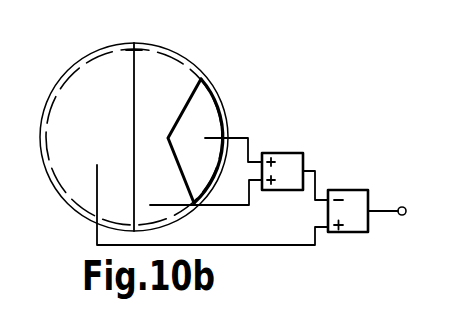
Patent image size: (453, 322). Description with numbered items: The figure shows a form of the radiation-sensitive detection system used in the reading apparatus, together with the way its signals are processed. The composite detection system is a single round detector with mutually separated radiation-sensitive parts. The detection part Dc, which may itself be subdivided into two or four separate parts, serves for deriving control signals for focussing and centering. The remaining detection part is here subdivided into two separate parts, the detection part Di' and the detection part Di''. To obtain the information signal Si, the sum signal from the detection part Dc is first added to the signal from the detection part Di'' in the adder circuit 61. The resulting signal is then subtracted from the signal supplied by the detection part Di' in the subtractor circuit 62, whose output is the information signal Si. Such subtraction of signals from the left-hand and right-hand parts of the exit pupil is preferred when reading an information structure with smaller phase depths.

The detection part Di' is at (126, 133).
The detection part Di'' is at (135, 123).
The detection part Dc is at (208, 113).
The adder circuit 61 is at (284, 153).
The subtractor circuit 62 is at (344, 190).
The information signal Si is at (401, 207).